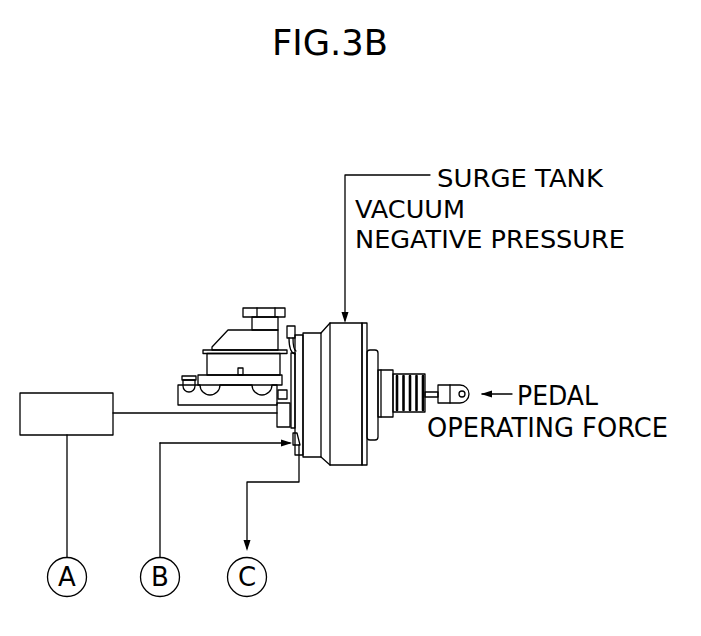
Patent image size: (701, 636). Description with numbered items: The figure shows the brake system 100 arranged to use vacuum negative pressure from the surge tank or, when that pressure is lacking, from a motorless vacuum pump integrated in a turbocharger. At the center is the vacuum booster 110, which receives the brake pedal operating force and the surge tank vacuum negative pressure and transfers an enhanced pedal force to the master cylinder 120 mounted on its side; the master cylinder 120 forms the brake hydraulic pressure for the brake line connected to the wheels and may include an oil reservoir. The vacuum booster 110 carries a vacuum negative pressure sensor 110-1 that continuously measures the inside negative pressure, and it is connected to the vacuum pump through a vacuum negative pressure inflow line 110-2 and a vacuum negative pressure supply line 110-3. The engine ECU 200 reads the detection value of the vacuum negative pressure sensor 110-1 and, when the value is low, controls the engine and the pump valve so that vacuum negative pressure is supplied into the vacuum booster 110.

The brake system 100 is at (370, 360).
The vacuum booster 110 is at (347, 348).
The vacuum negative pressure sensor 110-1 is at (285, 410).
The vacuum negative pressure inflow line 110-2 is at (300, 470).
The vacuum negative pressure supply line 110-3 is at (173, 442).
The master cylinder 120 is at (262, 392).
The engine ECU 200 is at (67, 390).